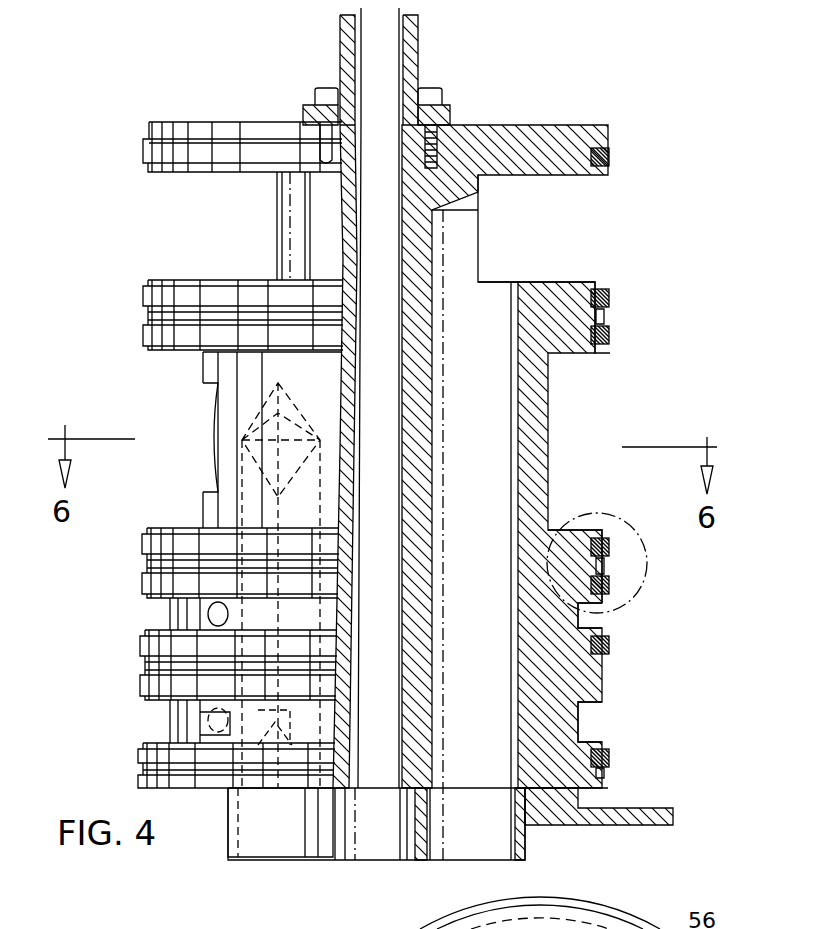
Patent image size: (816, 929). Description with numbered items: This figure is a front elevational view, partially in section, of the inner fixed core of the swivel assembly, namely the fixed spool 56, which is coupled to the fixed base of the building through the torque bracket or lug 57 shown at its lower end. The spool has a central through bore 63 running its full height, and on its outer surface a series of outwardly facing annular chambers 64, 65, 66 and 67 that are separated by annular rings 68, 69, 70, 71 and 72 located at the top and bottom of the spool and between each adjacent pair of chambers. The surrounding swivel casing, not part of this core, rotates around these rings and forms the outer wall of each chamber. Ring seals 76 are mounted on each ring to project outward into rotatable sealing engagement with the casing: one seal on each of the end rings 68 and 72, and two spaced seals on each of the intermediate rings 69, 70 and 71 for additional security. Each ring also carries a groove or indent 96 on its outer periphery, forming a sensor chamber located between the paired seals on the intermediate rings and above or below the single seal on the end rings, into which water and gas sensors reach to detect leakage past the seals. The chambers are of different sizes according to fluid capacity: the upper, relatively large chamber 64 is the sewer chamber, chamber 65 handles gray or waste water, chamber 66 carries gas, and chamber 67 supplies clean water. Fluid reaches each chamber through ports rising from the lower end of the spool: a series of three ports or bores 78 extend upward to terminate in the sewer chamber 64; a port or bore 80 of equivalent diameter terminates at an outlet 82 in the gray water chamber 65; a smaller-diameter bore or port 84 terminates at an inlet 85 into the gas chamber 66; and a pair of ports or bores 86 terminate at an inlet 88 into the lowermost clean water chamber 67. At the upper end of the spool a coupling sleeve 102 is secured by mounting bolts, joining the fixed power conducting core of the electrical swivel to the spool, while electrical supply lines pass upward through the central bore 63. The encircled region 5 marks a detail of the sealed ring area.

The coupling sleeve 102 is at (418, 40).
The annular ring 68 is at (522, 125).
The groove or indent 96 is at (150, 140).
The ring seal 76 is at (612, 160).
The annular chamber 64 is at (190, 212).
The central through bore 63 is at (360, 263).
The ports or bores 78 is at (483, 315).
The annular ring 69 is at (550, 282).
The annular chamber 65 is at (168, 361).
The outlet 82 is at (215, 413).
The fixed spool 56 is at (538, 398).
The port or bore 80 is at (193, 497).
The annular ring 70 is at (580, 530).
The detail region 5 is at (648, 573).
The annular ring 71 is at (610, 622).
The annular chamber 66 is at (138, 603).
The inlet 85 is at (207, 617).
The bore or port 84 is at (290, 643).
The annular chamber 67 is at (138, 714).
The inlet 88 is at (205, 718).
The annular ring 72 is at (597, 742).
The ports or bores 86 is at (270, 775).
The torque bracket or lug 57 is at (593, 820).